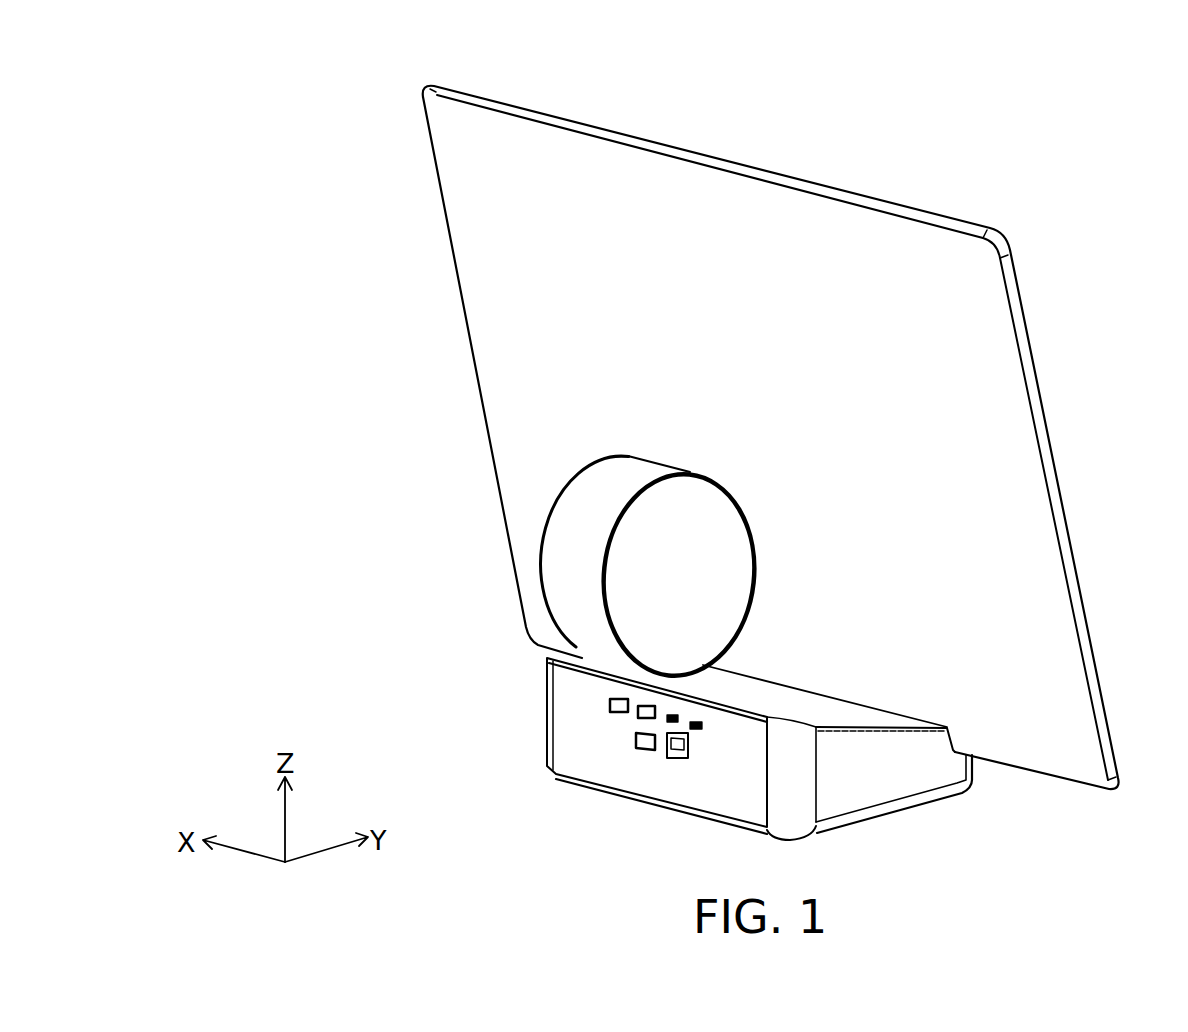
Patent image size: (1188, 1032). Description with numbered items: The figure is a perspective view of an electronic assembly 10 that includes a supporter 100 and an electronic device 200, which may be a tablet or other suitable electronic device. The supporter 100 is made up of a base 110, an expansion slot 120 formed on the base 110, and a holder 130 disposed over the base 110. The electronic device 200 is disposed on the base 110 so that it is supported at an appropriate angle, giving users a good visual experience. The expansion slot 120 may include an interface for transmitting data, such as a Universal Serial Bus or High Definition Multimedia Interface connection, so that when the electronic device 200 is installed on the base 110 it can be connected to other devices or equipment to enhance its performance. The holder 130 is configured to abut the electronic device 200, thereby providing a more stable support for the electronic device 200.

The electronic assembly 10 is at (280, 47).
The supporter 100 is at (494, 603).
The base 110 is at (582, 755).
The expansion slot 120 is at (678, 753).
The holder 130 is at (563, 620).
The electronic device 200 is at (1012, 407).